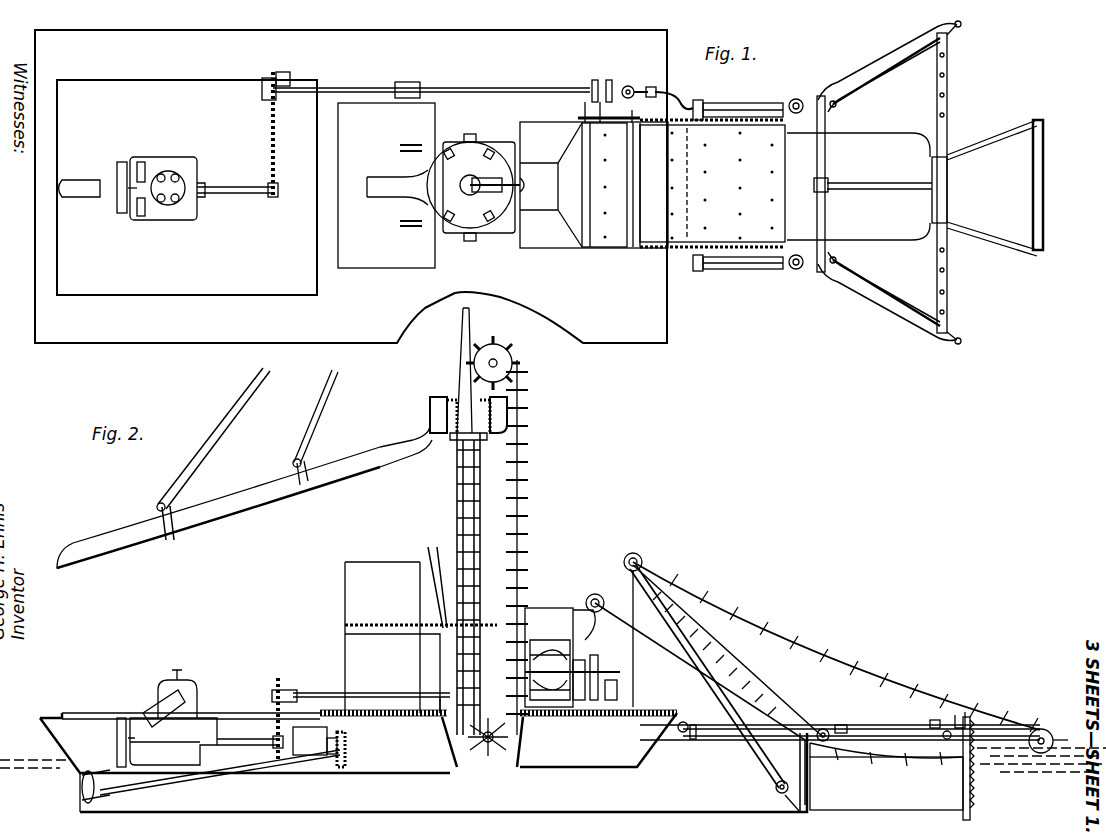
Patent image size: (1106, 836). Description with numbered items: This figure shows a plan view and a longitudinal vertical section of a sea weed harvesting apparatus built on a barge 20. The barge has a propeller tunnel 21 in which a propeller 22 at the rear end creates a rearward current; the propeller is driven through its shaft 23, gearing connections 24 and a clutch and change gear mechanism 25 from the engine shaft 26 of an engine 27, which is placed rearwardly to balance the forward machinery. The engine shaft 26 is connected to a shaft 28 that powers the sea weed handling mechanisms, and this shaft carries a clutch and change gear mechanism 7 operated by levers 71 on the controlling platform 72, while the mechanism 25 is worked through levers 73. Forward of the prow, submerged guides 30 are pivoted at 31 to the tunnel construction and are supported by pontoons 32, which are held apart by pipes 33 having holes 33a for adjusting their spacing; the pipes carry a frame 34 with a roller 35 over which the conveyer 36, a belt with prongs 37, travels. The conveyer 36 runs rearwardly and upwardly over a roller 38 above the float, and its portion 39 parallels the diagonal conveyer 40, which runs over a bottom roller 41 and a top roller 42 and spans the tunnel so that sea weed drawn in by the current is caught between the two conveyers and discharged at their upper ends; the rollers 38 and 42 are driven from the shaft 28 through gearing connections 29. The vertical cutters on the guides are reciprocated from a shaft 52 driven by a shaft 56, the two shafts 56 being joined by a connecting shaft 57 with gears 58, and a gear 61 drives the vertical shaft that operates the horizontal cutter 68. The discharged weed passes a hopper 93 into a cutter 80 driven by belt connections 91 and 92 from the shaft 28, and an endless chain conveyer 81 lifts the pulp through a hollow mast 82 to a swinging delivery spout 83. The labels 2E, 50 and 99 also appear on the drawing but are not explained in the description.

In FIG. 1, the clutch and change gear mechanism 7 is at (408, 82).
In FIG. 1, the shaft 2E is at (540, 78).
In FIG. 1, the barge 20 is at (308, 176).
In FIG. 2, the barge 20 is at (573, 736).
In FIG. 2, the propeller tunnel 21 is at (423, 761).
In FIG. 2, the propeller 22 is at (82, 787).
In FIG. 2, the propeller shaft 23 is at (176, 778).
In FIG. 2, the gearing connections 24 is at (350, 750).
In FIG. 2, the clutch and change gear mechanism 25 is at (310, 727).
In FIG. 1, the engine shaft 26 is at (233, 186).
In FIG. 2, the engine shaft 26 is at (243, 739).
In FIG. 1, the engine 27 is at (185, 162).
In FIG. 2, the engine 27 is at (160, 728).
In FIG. 1, the shaft 28 is at (343, 86).
In FIG. 2, the shaft 28 is at (328, 690).
In FIG. 2, the gearing connections 29 is at (648, 580).
In FIG. 2, the submerged guides 30 is at (886, 776).
In FIG. 1, the pivot 31 is at (792, 99).
In FIG. 2, the pivot 31 is at (821, 728).
In FIG. 1, the pontoons 32 is at (852, 72).
In FIG. 2, the pontoons 32 is at (887, 738).
In FIG. 1, the pipes 33 is at (948, 80).
In FIG. 2, the pipes 33 is at (838, 725).
In FIG. 1, the holes 33a is at (948, 106).
In FIG. 1, the frame 34 is at (978, 135).
In FIG. 1, the roller 35 is at (1045, 170).
In FIG. 2, the roller 35 is at (1047, 728).
In FIG. 1, the conveyer 36 is at (858, 186).
In FIG. 2, the conveyer 36 is at (932, 681).
In FIG. 2, the prongs 37 is at (870, 665).
In FIG. 1, the roller 38 is at (660, 148).
In FIG. 2, the roller 38 is at (642, 558).
In FIG. 2, the portion of conveyer 39 is at (738, 664).
In FIG. 2, the conveyer 40 is at (684, 734).
In FIG. 2, the roller 41 is at (775, 790).
In FIG. 2, the roller 42 is at (592, 594).
In FIG. 1, the post 50 is at (964, 25).
In FIG. 2, the post 50 is at (977, 793).
In FIG. 1, the shaft 52 is at (898, 78).
In FIG. 2, the shaft 52 is at (928, 723).
In FIG. 1, the shaft 56 is at (735, 103).
In FIG. 2, the shaft 56 is at (768, 724).
In FIG. 1, the connecting shaft 57 is at (690, 147).
In FIG. 2, the connecting shaft 57 is at (688, 740).
In FIG. 1, the gears 58 is at (696, 98).
In FIG. 2, the gears 58 is at (710, 742).
In FIG. 1, the gear 61 is at (818, 96).
In FIG. 2, the horizontal cutter 68 is at (812, 808).
In FIG. 1, the levers 71 is at (403, 143).
In FIG. 1, the controlling platform 72 is at (386, 185).
In FIG. 2, the controlling platform 72 is at (421, 669).
In FIG. 1, the levers 73 is at (403, 226).
In FIG. 2, the levers 73 is at (432, 582).
In FIG. 1, the cutter 80 is at (560, 257).
In FIG. 1, the endless chain conveyer 81 is at (496, 130).
In FIG. 2, the endless chain conveyer 81 is at (444, 528).
In FIG. 2, the hollow mast 82 is at (480, 492).
In FIG. 1, the delivery spout 83 is at (88, 197).
In FIG. 2, the delivery spout 83 is at (355, 478).
In FIG. 2, the belt connection 91 is at (590, 710).
In FIG. 2, the belt connection 92 is at (630, 712).
In FIG. 2, the hopper 93 is at (572, 657).
In FIG. 1, the hopper wall 99 is at (546, 230).